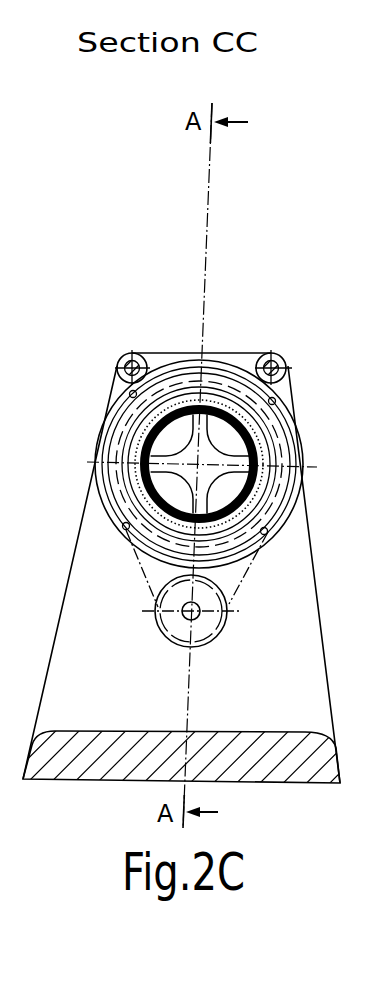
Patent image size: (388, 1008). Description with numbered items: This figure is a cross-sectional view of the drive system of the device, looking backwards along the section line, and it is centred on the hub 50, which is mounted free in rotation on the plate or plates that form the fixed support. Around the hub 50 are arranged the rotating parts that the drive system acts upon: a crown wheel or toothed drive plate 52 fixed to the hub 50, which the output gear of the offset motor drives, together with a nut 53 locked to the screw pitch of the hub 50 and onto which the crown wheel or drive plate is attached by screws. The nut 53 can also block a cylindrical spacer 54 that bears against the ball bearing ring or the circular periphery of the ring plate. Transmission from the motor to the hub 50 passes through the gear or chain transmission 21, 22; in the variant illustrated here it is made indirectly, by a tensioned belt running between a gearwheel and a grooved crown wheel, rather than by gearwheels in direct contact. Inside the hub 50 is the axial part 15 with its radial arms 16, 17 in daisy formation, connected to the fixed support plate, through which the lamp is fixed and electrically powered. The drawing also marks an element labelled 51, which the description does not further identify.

The axial part 15 is at (214, 452).
The radial arm 16 is at (238, 418).
The radial arm 17 is at (247, 512).
The gear or chain transmission 21 is at (200, 627).
The gear or chain transmission 22 is at (240, 578).
The hub 50 is at (154, 464).
The first seal ring 51 is at (48, 545).
The toothed drive plate 52 is at (130, 433).
The nut 53 is at (135, 478).
The cylindrical spacer 54 is at (140, 498).